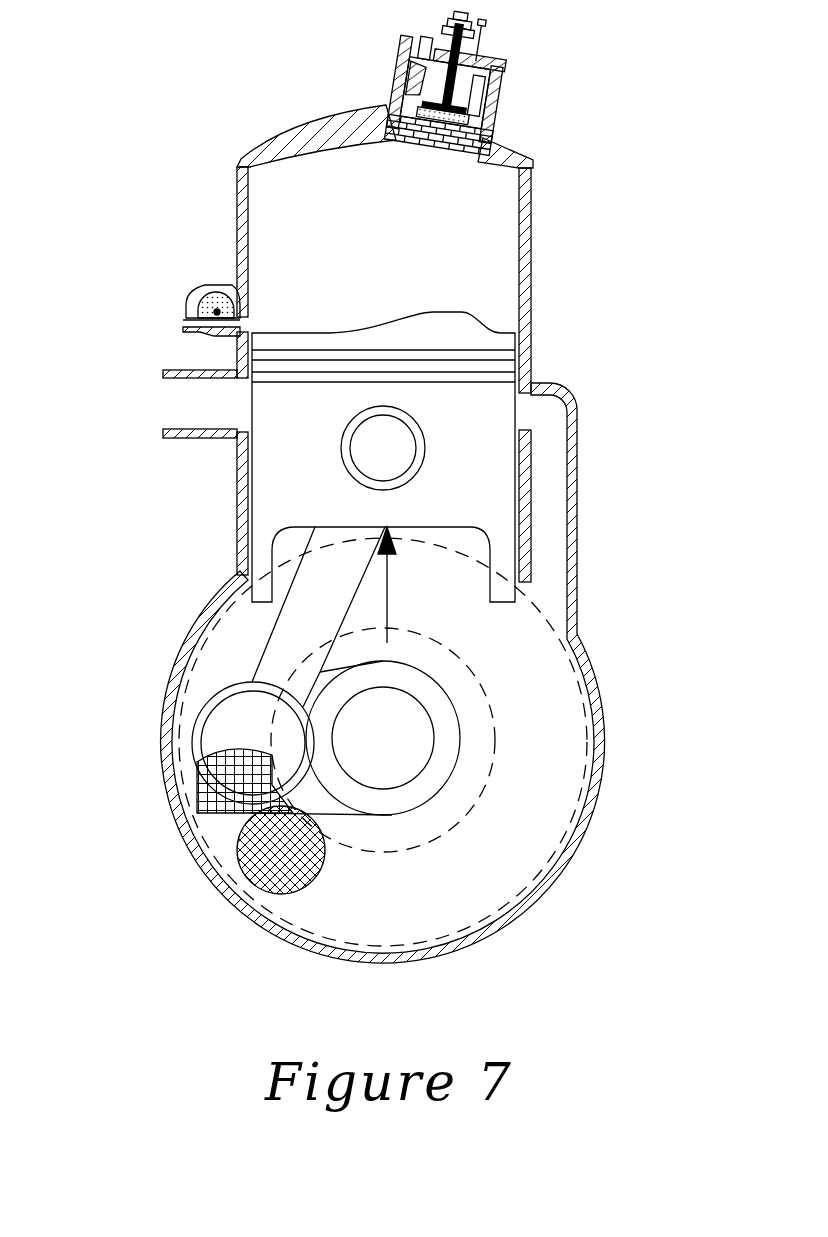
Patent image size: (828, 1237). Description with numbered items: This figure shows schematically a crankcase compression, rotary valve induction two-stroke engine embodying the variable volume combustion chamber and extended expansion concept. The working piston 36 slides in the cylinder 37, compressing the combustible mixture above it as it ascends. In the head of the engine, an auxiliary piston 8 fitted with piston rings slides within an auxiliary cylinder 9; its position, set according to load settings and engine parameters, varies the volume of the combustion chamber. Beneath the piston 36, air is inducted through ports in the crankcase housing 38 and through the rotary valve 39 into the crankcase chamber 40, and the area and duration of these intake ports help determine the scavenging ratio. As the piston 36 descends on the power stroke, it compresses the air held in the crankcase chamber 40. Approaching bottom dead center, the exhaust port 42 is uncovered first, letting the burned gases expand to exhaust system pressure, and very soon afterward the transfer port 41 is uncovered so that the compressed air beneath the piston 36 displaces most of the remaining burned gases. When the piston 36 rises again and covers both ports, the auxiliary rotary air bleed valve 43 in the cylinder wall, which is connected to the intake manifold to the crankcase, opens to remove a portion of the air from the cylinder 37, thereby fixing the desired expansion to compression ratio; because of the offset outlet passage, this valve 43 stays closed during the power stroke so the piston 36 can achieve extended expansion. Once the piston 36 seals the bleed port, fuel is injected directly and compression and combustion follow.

The auxiliary piston 8 is at (428, 145).
The auxiliary cylinder 9 is at (496, 104).
The working piston 36 is at (383, 457).
The cylinder 37 is at (411, 343).
The crankcase housing 38 is at (235, 820).
The rotary valve 39 is at (266, 874).
The crankcase chamber 40 is at (470, 806).
The transfer port 41 is at (553, 493).
The exhaust port 42 is at (172, 404).
The auxiliary rotary air bleed valve 43 is at (181, 310).